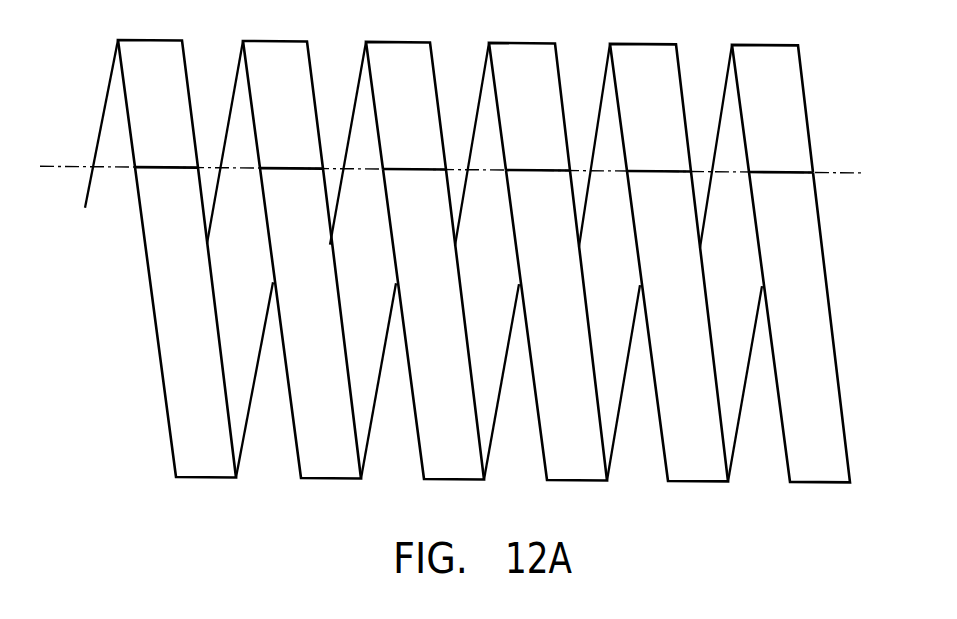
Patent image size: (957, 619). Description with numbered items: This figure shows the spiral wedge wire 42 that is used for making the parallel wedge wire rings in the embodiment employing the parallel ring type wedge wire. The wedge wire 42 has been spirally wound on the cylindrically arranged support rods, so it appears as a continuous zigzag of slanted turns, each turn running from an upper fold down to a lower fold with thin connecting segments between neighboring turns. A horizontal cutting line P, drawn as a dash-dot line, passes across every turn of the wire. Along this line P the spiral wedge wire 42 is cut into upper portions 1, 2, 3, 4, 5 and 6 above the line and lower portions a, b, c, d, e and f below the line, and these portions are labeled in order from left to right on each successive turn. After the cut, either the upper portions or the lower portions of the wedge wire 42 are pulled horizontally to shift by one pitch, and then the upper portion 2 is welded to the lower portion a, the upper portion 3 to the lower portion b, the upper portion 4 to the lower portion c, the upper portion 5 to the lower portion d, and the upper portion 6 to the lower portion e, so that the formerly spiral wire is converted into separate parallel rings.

The wedge wire 42 is at (456, 261).
The upper portion 1 is at (158, 104).
The upper portion 2 is at (283, 105).
The upper portion 3 is at (406, 106).
The upper portion 4 is at (529, 107).
The upper portion 5 is at (650, 108).
The upper portion 6 is at (772, 109).
The lower portion a is at (185, 322).
The lower portion b is at (310, 323).
The lower portion c is at (433, 324).
The lower portion d is at (556, 325).
The lower portion e is at (677, 326).
The lower portion f is at (799, 327).
The line P is at (465, 176).